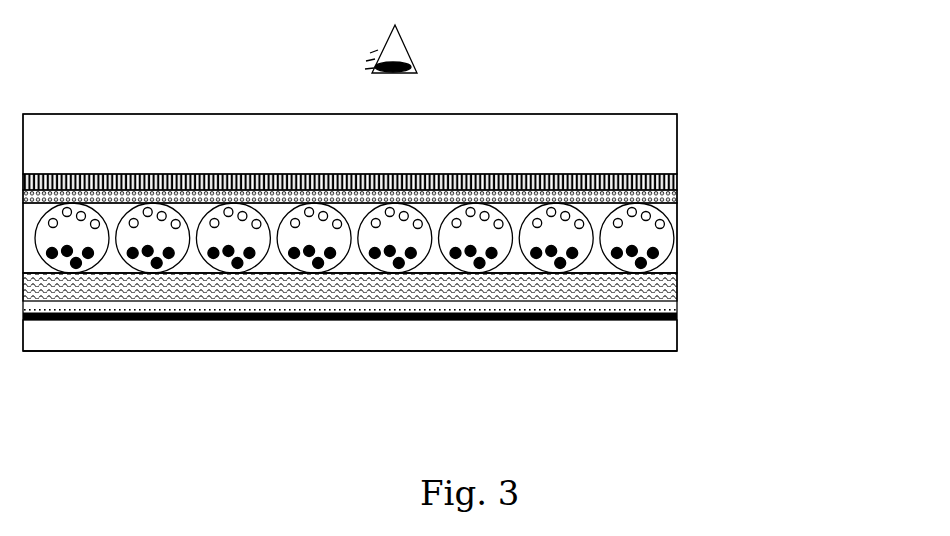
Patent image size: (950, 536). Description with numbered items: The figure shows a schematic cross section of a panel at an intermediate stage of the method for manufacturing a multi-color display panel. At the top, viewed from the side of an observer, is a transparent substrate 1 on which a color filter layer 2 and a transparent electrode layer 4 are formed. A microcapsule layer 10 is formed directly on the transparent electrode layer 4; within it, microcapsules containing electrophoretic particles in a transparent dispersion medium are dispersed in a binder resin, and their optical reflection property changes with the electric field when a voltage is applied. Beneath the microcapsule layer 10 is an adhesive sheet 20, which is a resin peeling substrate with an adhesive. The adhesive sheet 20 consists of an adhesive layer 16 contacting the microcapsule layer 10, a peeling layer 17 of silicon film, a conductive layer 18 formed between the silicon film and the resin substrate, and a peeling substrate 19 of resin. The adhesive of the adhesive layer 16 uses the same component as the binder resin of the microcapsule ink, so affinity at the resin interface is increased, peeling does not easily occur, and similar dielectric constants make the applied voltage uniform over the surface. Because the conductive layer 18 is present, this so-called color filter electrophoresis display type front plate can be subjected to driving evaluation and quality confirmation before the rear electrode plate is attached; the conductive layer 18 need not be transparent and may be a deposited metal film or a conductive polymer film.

The transparent substrate 1 is at (633, 157).
The color filter layer 2 is at (628, 199).
The transparent electrode layer 4 is at (628, 200).
The microcapsule layer 10 is at (720, 211).
The adhesive layer 16 is at (677, 287).
The peeling layer 17 is at (660, 312).
The conductive layer 18 is at (660, 320).
The peeling substrate 19 is at (655, 342).
The adhesive sheet 20 is at (820, 277).